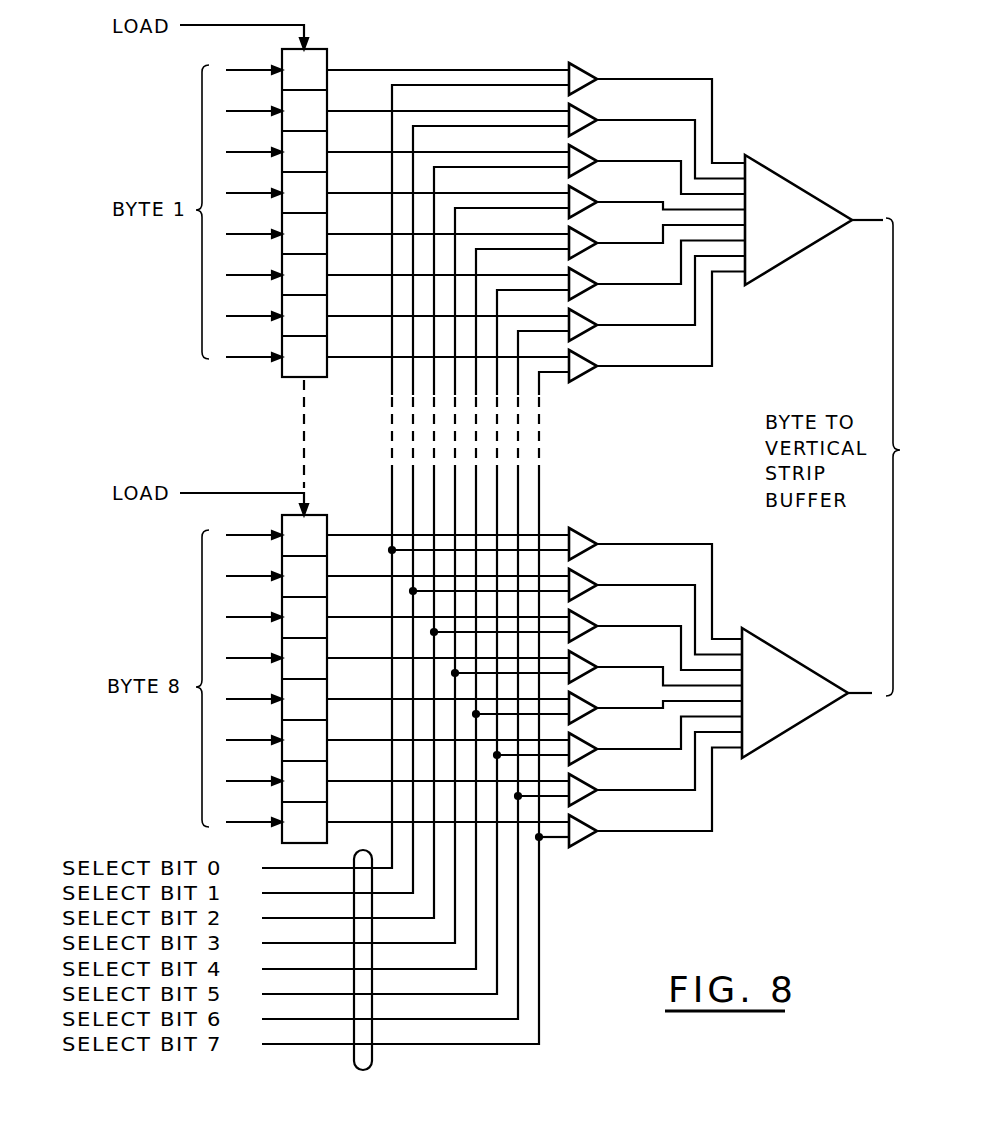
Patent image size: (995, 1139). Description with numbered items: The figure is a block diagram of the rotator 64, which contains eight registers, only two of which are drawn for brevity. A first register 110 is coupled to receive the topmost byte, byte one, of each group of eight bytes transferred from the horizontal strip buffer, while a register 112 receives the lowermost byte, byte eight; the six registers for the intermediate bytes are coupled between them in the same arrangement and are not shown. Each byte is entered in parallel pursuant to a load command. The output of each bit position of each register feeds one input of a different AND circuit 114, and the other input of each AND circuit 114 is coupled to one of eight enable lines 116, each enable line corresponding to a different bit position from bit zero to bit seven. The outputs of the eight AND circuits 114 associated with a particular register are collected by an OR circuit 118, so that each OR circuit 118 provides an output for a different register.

The rotator 64 is at (654, 485).
The first register 110 is at (328, 53).
The register 112 is at (328, 518).
The AND circuits 114 is at (587, 120).
The enable lines 116 is at (372, 1060).
The OR circuits 118 is at (794, 233).